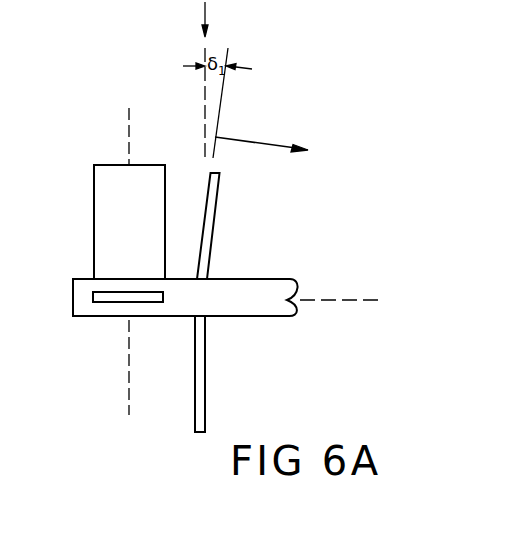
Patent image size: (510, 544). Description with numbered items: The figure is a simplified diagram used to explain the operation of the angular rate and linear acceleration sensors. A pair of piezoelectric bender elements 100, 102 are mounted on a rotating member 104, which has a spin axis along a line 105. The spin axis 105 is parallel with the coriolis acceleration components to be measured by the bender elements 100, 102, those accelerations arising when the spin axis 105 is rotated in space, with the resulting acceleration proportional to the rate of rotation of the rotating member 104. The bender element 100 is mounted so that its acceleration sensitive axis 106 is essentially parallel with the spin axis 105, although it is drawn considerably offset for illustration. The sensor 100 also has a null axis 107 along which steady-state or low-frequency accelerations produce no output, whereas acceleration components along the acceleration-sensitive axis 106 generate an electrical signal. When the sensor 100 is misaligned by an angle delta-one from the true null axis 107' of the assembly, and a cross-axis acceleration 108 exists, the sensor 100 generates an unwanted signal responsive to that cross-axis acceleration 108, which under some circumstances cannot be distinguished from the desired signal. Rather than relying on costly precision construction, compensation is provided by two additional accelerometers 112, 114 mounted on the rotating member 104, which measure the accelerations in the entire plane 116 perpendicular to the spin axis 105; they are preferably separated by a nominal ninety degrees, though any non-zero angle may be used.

The piezoelectric bender element 100 is at (213, 218).
The piezoelectric bender element 102 is at (205, 372).
The rotating member 104 is at (230, 279).
The spin axis 105 is at (317, 300).
The acceleration sensitive axis 106 is at (260, 135).
The null axis 107 is at (248, 96).
The true null axis 107' is at (176, 105).
The cross-axis acceleration 108 is at (205, 13).
The accelerometer 112 is at (94, 217).
The accelerometer 114 is at (110, 303).
The plane 116 is at (129, 132).